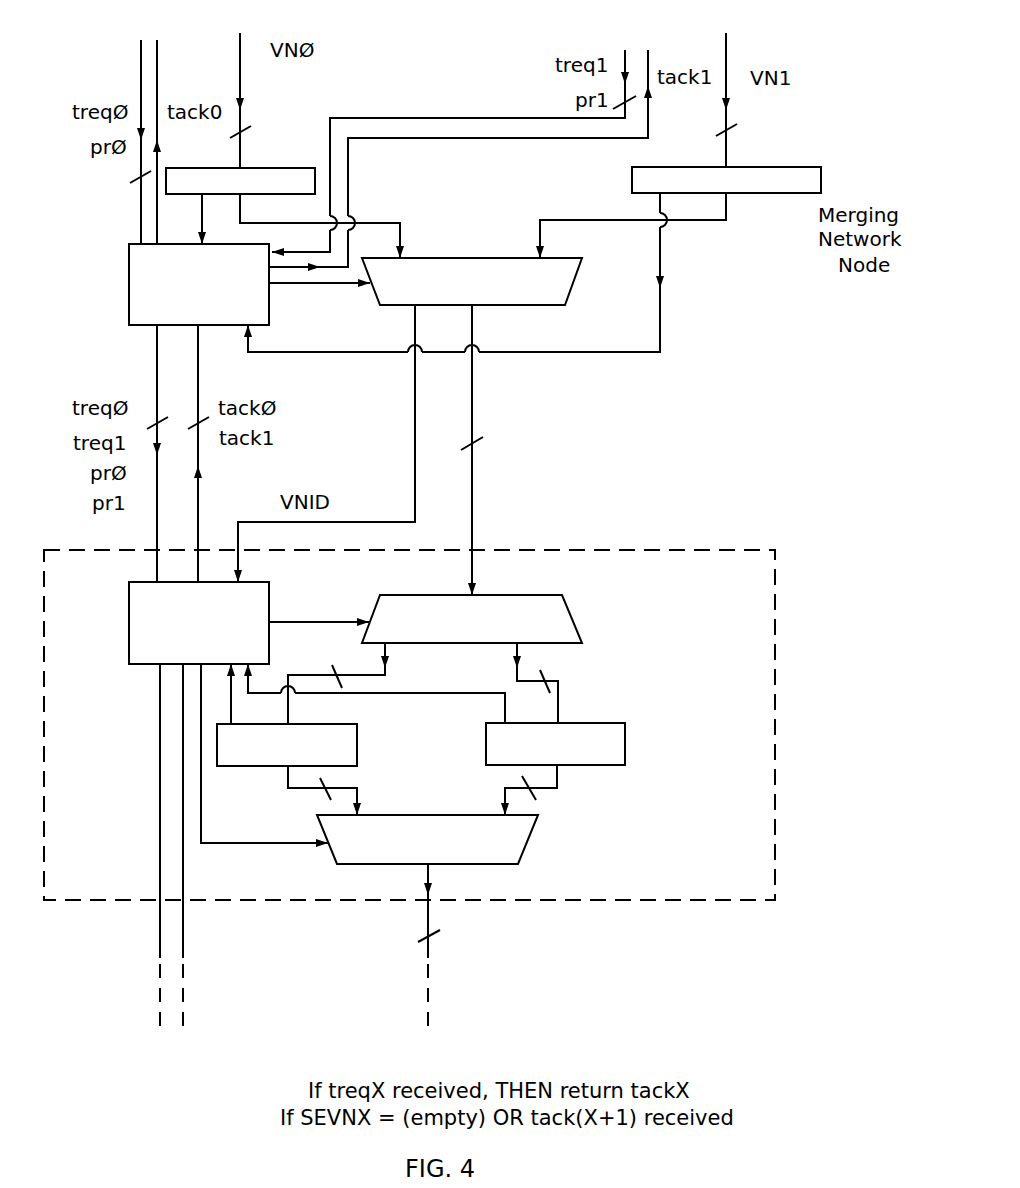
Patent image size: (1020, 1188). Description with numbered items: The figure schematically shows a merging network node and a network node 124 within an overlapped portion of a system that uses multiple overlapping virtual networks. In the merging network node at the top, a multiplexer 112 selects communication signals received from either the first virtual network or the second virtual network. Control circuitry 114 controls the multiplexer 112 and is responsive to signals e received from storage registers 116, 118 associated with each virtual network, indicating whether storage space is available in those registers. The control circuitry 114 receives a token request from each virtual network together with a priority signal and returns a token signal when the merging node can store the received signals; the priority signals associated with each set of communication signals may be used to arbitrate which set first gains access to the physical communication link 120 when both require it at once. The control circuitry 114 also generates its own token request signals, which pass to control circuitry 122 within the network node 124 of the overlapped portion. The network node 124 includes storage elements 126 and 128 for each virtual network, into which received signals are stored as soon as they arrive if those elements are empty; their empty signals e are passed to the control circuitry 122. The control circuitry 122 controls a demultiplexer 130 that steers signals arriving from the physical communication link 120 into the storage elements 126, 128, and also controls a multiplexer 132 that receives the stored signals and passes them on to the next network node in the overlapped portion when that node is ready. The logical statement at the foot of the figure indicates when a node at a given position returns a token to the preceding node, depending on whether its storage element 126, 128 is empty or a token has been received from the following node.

The multiplexer 112 is at (575, 287).
The control circuitry 114 is at (129, 289).
The storage register 116 is at (288, 152).
The storage register 118 is at (794, 152).
The physical communication link 120 is at (475, 503).
The control circuitry 122 is at (129, 628).
The network node 124 is at (775, 845).
The storage element 126 is at (357, 745).
The storage element 128 is at (625, 745).
The demultiplexer 130 is at (572, 617).
The multiplexer 132 is at (530, 840).